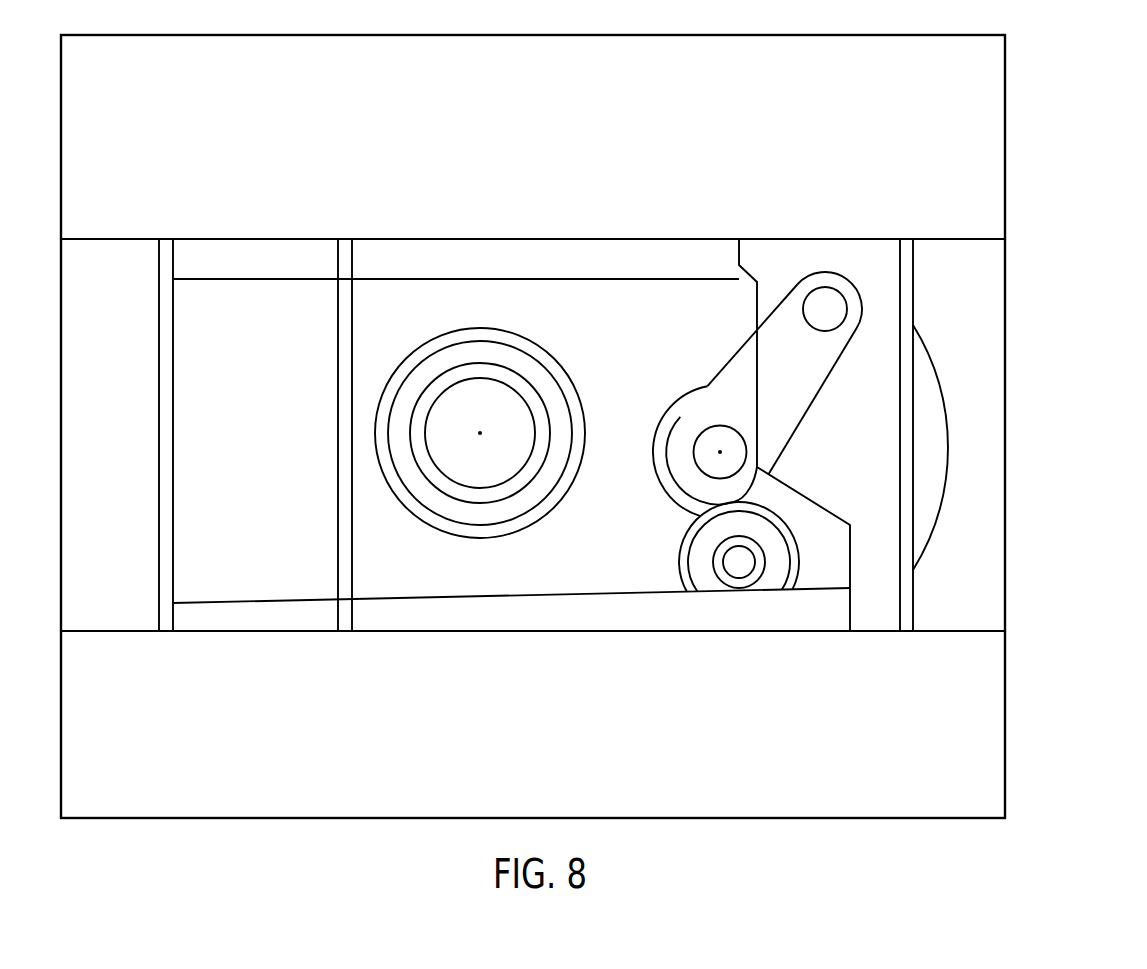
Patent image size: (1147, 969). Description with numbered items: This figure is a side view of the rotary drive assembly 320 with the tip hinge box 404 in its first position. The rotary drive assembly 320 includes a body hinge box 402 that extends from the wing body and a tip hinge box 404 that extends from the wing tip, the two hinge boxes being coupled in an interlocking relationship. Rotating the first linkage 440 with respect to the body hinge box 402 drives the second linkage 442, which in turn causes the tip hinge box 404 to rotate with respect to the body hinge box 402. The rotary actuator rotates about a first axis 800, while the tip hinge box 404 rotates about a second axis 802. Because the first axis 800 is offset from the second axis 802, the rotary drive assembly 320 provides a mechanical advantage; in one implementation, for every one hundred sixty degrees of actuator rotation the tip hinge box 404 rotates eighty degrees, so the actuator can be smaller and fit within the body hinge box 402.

The rotary drive assembly 320 is at (1025, 205).
The body hinge box 402 is at (877, 340).
The tip hinge box 404 is at (290, 315).
The first linkage 440 is at (803, 372).
The second linkage 442 is at (783, 465).
The first axis 800 is at (720, 452).
The second axis 802 is at (480, 433).